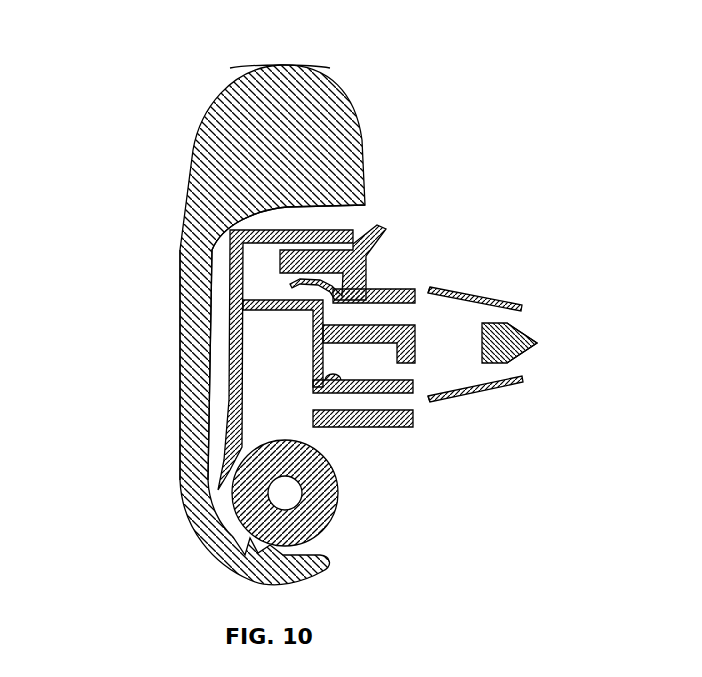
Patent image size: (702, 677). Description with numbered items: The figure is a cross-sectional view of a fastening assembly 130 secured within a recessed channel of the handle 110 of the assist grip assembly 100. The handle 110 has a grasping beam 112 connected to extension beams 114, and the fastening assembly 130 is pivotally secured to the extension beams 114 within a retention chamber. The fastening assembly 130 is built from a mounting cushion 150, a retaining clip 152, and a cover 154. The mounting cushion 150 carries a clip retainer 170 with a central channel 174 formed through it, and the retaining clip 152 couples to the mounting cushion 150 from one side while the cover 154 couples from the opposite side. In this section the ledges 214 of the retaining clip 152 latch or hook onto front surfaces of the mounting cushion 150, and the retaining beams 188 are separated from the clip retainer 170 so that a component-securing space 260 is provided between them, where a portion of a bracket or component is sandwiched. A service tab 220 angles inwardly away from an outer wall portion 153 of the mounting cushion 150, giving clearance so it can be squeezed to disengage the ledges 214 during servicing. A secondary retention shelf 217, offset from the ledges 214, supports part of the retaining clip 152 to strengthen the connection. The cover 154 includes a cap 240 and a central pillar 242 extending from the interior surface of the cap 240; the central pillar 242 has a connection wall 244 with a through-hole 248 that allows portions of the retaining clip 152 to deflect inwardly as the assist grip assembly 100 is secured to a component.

The assist grip assembly 100 is at (176, 70).
The handle 110 is at (246, 68).
The grasping beam 112 is at (306, 66).
The extension beam 114 is at (180, 277).
The outer wall portion 153 is at (308, 262).
The service tab 220 is at (183, 190).
The connection wall 244 is at (390, 345).
The ledge 214 is at (367, 283).
The mounting cushion 150 is at (400, 268).
The clip retainer 170 is at (413, 287).
The cover 154 is at (373, 382).
The secondary retention shelf 217 is at (374, 389).
The fastening assembly 130 is at (388, 268).
The retaining beam 188 is at (506, 301).
The component-securing space 260 is at (428, 289).
The through-hole 248 is at (468, 343).
The cap 240 is at (522, 357).
The central pillar 242 is at (537, 342).
The retaining clip 152 is at (508, 389).
The central channel 174 is at (414, 314).